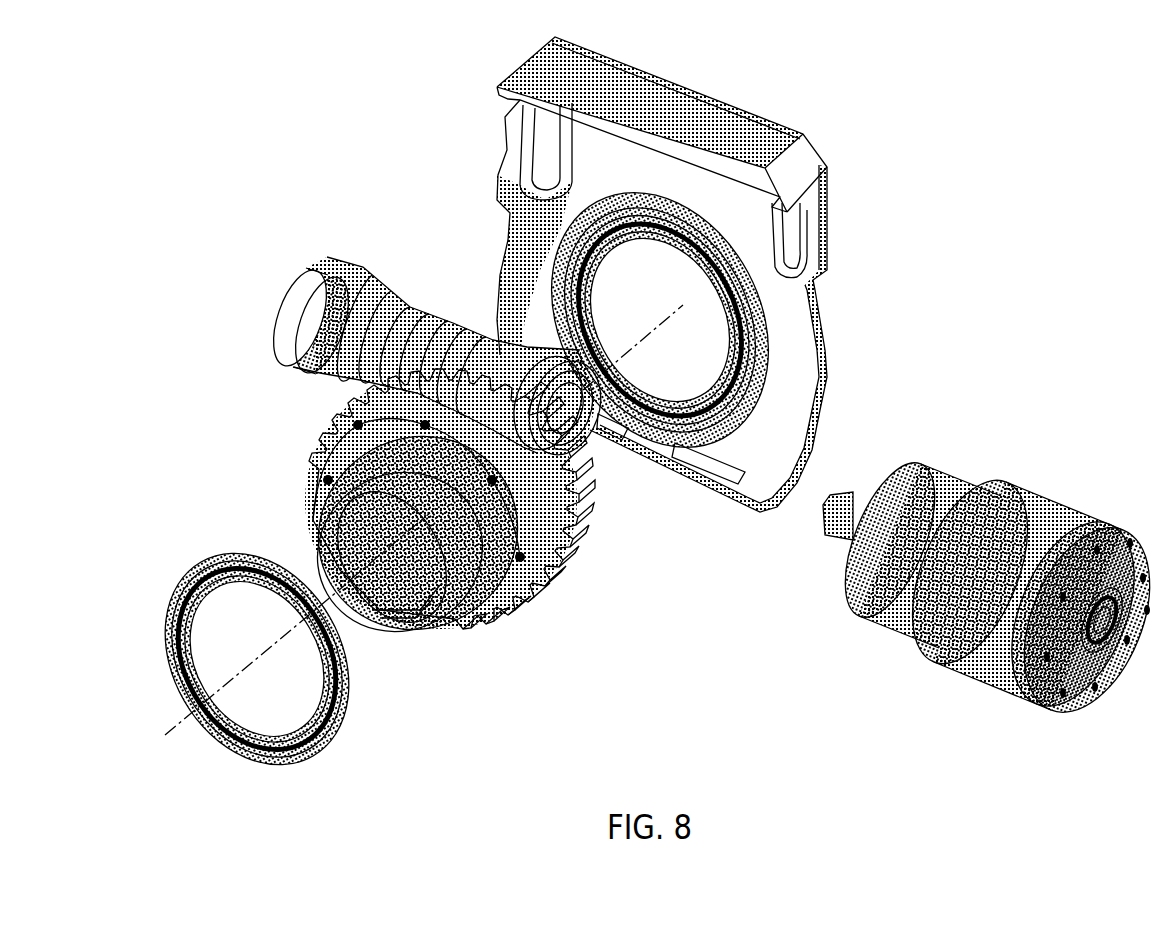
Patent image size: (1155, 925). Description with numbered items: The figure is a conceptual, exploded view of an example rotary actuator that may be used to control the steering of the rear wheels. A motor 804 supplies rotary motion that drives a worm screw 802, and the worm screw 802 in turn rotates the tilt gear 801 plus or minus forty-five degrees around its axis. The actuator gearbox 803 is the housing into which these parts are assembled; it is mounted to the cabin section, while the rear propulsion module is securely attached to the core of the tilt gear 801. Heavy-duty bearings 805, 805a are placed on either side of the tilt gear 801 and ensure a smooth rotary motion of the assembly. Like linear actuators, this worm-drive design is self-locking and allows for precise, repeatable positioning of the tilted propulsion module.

The tilt gear 801 is at (528, 585).
The worm screw 802 is at (302, 297).
The actuator gearbox 803 is at (810, 163).
The motor 804 is at (1043, 495).
The heavy-duty bearing 805 is at (595, 263).
The heavy-duty bearing 805a is at (343, 690).